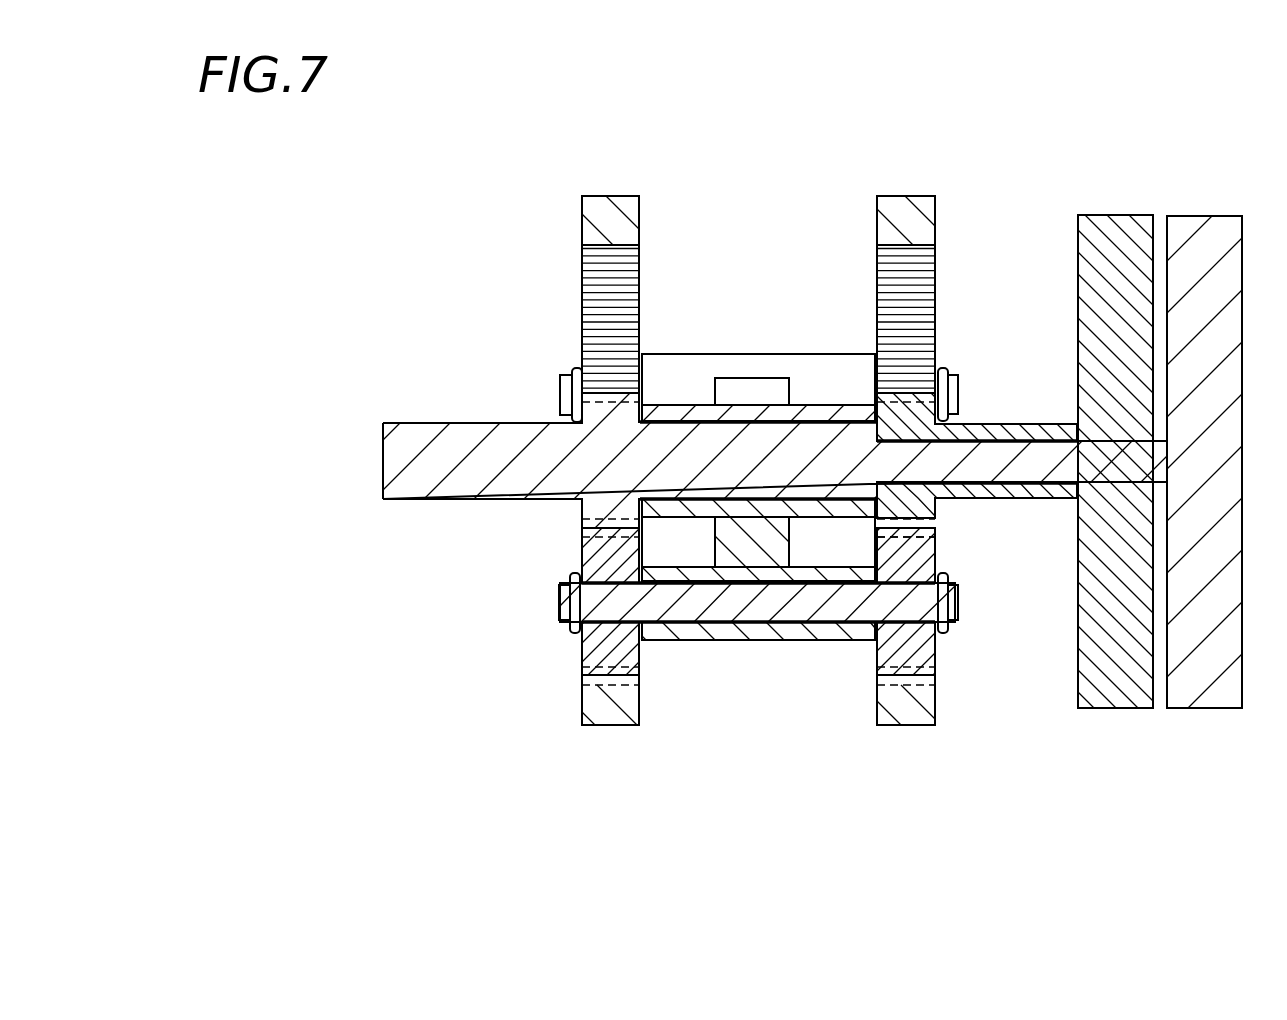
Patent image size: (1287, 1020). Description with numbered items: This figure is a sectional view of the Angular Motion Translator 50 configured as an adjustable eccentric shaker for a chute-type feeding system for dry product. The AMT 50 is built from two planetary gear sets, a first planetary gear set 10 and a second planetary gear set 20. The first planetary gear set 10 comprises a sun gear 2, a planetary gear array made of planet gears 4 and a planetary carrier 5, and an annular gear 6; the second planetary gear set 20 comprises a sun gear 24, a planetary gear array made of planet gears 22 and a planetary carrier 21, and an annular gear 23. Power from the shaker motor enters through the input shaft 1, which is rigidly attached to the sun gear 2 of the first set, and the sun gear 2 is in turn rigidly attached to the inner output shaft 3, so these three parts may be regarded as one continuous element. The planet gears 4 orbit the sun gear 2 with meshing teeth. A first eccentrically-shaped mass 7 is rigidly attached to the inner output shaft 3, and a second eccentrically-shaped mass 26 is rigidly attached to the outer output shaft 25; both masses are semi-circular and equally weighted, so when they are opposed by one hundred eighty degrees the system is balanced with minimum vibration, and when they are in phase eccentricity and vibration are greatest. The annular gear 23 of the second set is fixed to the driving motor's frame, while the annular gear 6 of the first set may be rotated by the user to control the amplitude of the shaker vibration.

The input shaft 1 is at (383, 483).
The sun gear 2 is at (602, 460).
The inner output shaft 3 is at (1072, 460).
The planet gears 4 is at (602, 655).
The planetary carrier 5 is at (675, 390).
The annular gear 6 is at (600, 208).
The first eccentrically-shaped mass 7 is at (1210, 218).
The first planetary gear set 10 is at (620, 771).
The second planetary gear set 20 is at (915, 771).
The planetary carrier 21 is at (832, 392).
The planet gears 22 is at (935, 560).
The annular gear 23 is at (897, 205).
The sun gear 24 is at (935, 513).
The outer output shaft 25 is at (990, 430).
The second eccentrically-shaped mass 26 is at (1108, 218).
The Angular Motion Translator 50 is at (752, 857).